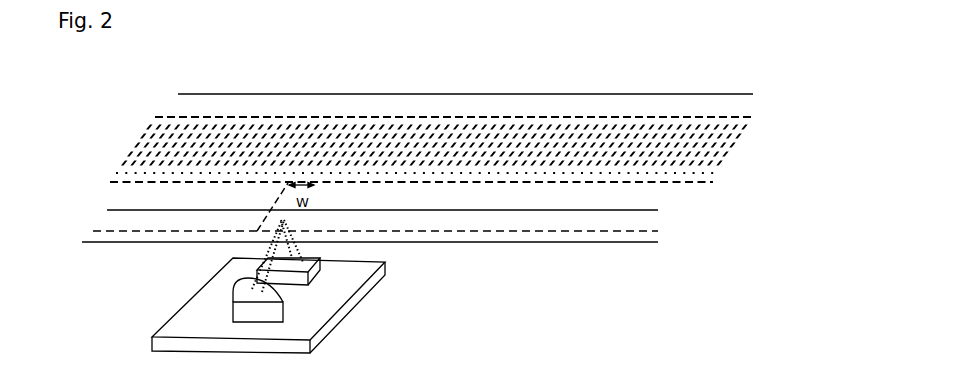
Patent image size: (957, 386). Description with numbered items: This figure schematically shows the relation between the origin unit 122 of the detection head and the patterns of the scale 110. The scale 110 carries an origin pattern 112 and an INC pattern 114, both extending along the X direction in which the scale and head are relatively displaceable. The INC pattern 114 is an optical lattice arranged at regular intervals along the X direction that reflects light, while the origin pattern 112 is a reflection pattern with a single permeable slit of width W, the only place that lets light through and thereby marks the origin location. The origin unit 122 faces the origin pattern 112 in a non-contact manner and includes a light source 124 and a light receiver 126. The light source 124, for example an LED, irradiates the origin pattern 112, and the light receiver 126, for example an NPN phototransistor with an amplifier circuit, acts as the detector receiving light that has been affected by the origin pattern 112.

The scale 110 is at (415, 88).
The origin pattern 112 is at (620, 220).
The INC pattern 114 is at (693, 140).
The origin unit 122 is at (192, 294).
The light source 124 is at (273, 310).
The light receiver 126 is at (318, 268).